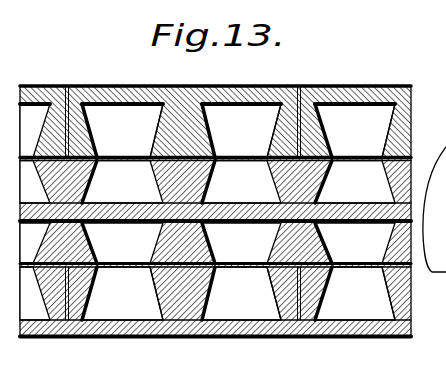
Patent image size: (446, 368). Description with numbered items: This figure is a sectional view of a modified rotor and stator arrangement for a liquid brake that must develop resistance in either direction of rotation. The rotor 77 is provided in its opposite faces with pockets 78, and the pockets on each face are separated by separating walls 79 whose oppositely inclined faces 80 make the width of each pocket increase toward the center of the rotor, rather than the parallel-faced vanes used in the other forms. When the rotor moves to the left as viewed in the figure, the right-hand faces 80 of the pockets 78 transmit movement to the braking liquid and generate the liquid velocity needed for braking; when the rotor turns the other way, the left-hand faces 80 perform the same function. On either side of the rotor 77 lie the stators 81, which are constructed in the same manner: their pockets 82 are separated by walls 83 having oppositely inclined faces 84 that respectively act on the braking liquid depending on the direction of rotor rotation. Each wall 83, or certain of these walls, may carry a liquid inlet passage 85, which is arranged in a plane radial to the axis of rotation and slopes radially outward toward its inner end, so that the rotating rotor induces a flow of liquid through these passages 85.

The rotor 77 is at (410, 253).
The pockets 78 is at (207, 212).
The separating walls 79 is at (290, 230).
The oppositely inclined faces 80 is at (272, 240).
The stators 81 is at (370, 87).
The pockets 82 is at (240, 111).
The walls 83 is at (181, 108).
The oppositely inclined faces 84 is at (157, 122).
The liquid inlet passages 85 is at (299, 87).